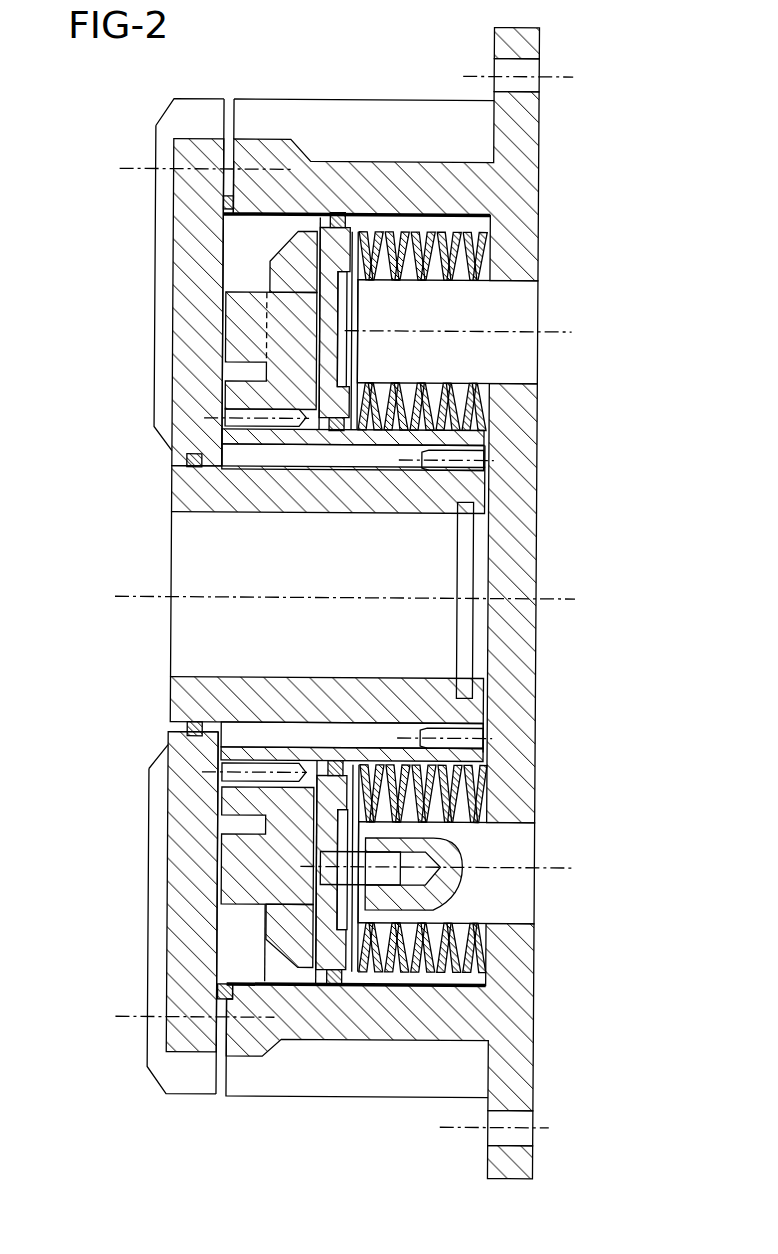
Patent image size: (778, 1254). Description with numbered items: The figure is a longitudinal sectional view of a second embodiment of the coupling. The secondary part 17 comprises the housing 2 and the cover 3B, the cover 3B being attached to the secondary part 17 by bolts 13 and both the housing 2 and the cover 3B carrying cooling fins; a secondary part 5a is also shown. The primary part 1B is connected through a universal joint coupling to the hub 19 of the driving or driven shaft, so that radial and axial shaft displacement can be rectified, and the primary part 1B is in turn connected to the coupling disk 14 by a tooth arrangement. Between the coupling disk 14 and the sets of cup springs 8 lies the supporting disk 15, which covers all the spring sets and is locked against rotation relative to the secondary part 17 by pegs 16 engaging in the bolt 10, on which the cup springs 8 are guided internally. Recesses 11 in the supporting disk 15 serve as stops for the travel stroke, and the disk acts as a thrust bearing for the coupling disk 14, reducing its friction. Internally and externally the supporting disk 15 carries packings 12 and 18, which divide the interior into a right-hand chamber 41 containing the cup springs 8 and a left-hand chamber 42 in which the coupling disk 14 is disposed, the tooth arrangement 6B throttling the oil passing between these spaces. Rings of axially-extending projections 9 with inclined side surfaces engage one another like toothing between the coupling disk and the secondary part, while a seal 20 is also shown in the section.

The housing 2 is at (415, 187).
The secondary part 5a is at (522, 100).
The cover 3B is at (185, 220).
The cup springs 8 is at (447, 230).
The axially-extending projections 9 is at (242, 330).
The bolt 10 is at (508, 365).
The recesses 11 is at (343, 298).
The packing 12 is at (340, 213).
The bolts 13 is at (172, 168).
The coupling disk 14 is at (287, 270).
The supporting disk 15 is at (327, 797).
The pegs 16 is at (393, 828).
The secondary part 17 is at (513, 442).
The packing 18 is at (335, 446).
The hub 19 is at (193, 493).
The seal ring 20 is at (252, 113).
The right-hand chamber 41 is at (480, 225).
The left-hand chamber 42 is at (235, 270).
The primary part 1B is at (242, 433).
The tooth arrangement 6B is at (465, 738).